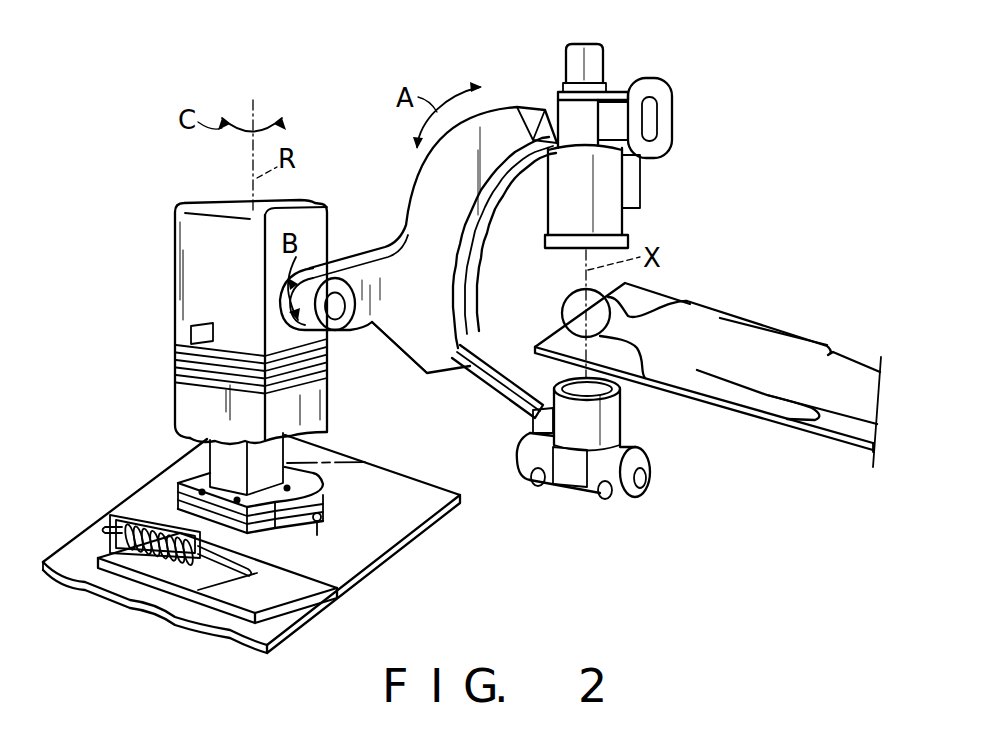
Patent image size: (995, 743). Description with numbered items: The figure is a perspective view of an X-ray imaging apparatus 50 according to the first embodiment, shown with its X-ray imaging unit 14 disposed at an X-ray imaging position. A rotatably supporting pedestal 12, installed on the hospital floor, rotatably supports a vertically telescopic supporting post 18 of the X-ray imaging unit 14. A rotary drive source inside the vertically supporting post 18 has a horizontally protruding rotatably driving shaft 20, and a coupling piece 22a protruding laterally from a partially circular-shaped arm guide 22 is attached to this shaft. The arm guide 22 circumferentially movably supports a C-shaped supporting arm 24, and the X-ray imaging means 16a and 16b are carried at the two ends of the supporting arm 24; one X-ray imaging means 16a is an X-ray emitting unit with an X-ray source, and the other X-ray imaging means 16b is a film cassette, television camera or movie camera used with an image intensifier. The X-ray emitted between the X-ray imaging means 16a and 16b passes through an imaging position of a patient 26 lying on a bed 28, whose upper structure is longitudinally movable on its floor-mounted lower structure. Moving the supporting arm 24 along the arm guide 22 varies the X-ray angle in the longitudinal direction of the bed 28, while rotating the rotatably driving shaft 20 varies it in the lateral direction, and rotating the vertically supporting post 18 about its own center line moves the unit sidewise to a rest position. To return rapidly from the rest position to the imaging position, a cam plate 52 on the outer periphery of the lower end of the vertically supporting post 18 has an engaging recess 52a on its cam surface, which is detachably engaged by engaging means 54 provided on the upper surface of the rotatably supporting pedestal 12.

The rotatably supporting pedestal 12 is at (362, 557).
The X-ray imaging unit 14 is at (333, 208).
The X-ray imaging means 16a is at (633, 493).
The X-ray imaging means 16b is at (627, 225).
The vertically supporting post 18 is at (177, 243).
The rotatably driving shaft 20 is at (337, 292).
The arm guide 22 is at (418, 204).
The coupling piece 22a is at (368, 320).
The supporting arm 24 is at (503, 402).
The patient 26 is at (770, 340).
The bed 28 is at (832, 428).
The X-ray imaging apparatus 50 is at (160, 347).
The cam plate 52 is at (328, 505).
The engaging recess 52a is at (322, 519).
The engaging means 54 is at (243, 620).